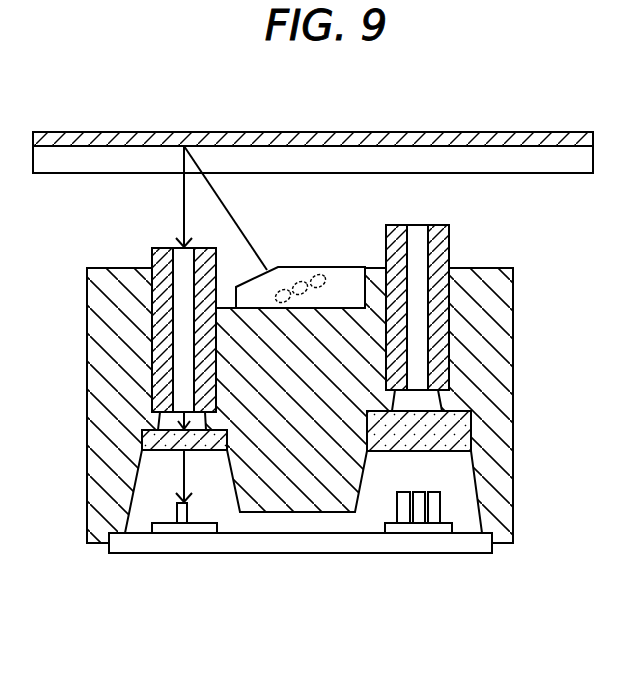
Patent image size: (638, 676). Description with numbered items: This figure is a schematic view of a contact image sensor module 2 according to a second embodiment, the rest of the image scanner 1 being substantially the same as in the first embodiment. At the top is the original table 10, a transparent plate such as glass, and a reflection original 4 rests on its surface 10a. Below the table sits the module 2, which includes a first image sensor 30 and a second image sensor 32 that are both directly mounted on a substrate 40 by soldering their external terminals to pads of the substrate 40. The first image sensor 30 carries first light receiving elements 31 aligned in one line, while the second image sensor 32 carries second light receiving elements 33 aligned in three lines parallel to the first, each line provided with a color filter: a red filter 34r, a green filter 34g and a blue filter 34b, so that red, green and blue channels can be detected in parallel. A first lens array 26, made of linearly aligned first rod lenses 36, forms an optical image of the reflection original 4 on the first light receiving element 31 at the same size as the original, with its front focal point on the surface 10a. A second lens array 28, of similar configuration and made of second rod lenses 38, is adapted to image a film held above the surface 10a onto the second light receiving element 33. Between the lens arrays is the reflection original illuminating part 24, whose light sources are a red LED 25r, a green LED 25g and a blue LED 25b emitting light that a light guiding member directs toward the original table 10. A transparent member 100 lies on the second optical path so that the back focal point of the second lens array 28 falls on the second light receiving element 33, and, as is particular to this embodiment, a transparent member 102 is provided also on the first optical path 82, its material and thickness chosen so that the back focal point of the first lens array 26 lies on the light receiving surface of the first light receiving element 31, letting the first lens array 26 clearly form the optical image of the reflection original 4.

The image scanner 1 is at (313, 116).
The contact image sensor module 2 is at (305, 360).
The reflection original 4 is at (335, 139).
The original table 10 is at (72, 156).
The surface of the original table 10a is at (147, 132).
The reflection original illuminating part 24 is at (356, 295).
The red LED 25r is at (278, 289).
The green LED 25g is at (297, 281).
The blue LED 25b is at (320, 274).
The first lens array 26 is at (152, 264).
The second lens array 28 is at (446, 249).
The first image sensor 30 is at (157, 533).
The first light receiving element 31 is at (201, 524).
The second image sensor 32 is at (382, 530).
The second light receiving element 33 is at (418, 500).
The red filter 34r is at (398, 493).
The green filter 34g is at (417, 495).
The blue filter 34b is at (440, 498).
The first rod lens 36 is at (181, 264).
The second rod lens 38 is at (417, 242).
The substrate 40 is at (280, 545).
The first optical path 82 is at (213, 185).
The transparent member 100 is at (466, 425).
The transparent member 102 is at (150, 443).